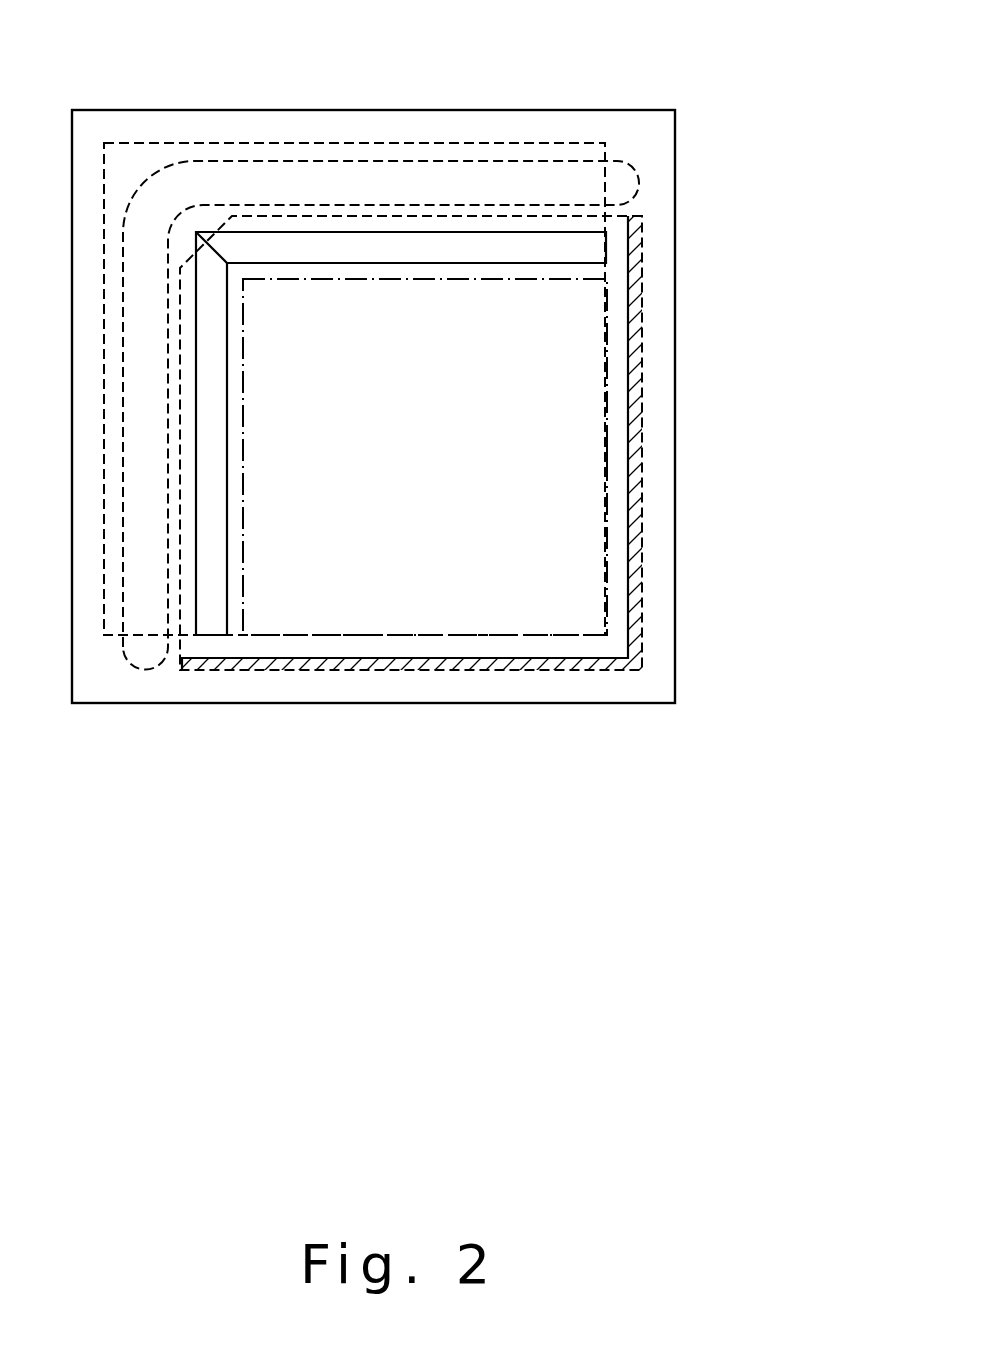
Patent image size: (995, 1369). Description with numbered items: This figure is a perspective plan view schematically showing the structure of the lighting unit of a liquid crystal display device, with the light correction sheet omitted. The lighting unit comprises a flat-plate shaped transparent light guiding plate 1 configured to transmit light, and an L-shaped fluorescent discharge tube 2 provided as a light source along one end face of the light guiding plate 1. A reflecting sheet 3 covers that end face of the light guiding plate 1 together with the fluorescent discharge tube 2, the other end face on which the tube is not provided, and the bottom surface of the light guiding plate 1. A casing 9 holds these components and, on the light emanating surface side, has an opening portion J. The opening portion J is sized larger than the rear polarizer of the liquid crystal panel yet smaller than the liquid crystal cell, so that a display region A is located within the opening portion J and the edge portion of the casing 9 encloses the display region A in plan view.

The light guiding plate 1 is at (390, 613).
The fluorescent discharge tube 2 is at (143, 657).
The reflecting sheet 3 is at (210, 608).
The casing 9 is at (650, 138).
The display region A is at (572, 380).
The opening portion J is at (615, 457).